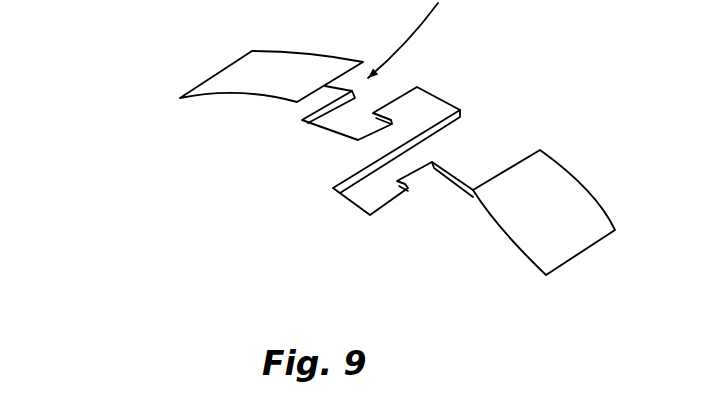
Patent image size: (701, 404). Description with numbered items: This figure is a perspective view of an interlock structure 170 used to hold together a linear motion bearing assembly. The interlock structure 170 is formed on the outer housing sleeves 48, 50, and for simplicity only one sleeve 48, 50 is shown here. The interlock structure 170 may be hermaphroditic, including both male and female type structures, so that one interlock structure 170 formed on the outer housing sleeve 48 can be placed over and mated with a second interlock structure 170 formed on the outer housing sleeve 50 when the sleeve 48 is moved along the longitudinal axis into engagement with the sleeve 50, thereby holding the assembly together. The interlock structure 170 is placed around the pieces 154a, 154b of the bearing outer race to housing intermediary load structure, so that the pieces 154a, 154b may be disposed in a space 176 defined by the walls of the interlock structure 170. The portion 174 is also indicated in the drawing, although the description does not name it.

The piece of bearing outer race to housing intermediary load structure 154a is at (243, 75).
The piece of bearing outer race to housing intermediary load structure 154b is at (548, 207).
The space 176 is at (370, 102).
The interlock structure 170 is at (138, 113).
The offset strip portion 174 is at (425, 227).
The outer housing sleeve 48 is at (225, 173).
The outer housing sleeve 50 is at (364, 165).